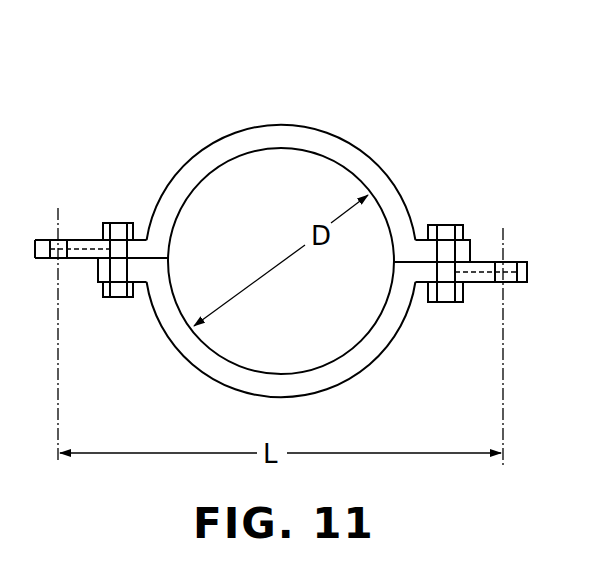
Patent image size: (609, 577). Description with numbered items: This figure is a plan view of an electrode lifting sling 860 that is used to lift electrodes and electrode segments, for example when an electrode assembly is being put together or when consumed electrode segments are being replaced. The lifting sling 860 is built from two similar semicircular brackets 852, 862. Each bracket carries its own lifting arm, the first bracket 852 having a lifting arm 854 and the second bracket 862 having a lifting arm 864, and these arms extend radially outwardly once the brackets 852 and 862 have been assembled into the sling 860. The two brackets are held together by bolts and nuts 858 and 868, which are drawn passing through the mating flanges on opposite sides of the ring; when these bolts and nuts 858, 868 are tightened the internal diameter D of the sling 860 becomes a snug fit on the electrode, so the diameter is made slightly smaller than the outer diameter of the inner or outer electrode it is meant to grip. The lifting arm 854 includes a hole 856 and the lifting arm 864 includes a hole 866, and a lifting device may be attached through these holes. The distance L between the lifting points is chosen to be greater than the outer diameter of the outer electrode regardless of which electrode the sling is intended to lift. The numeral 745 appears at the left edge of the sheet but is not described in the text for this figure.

The lifting sling 860 is at (263, 264).
The semicircular bracket 852 is at (287, 124).
The semicircular bracket 862 is at (170, 347).
The lifting arm 854 is at (34, 240).
The hole 856 is at (47, 260).
The bolts and nuts 858 is at (107, 297).
The bolts and nuts 868 is at (457, 225).
The lifting arm 864 is at (527, 262).
The hole 866 is at (497, 285).
The pipe centerline reference 745 is at (29, 335).